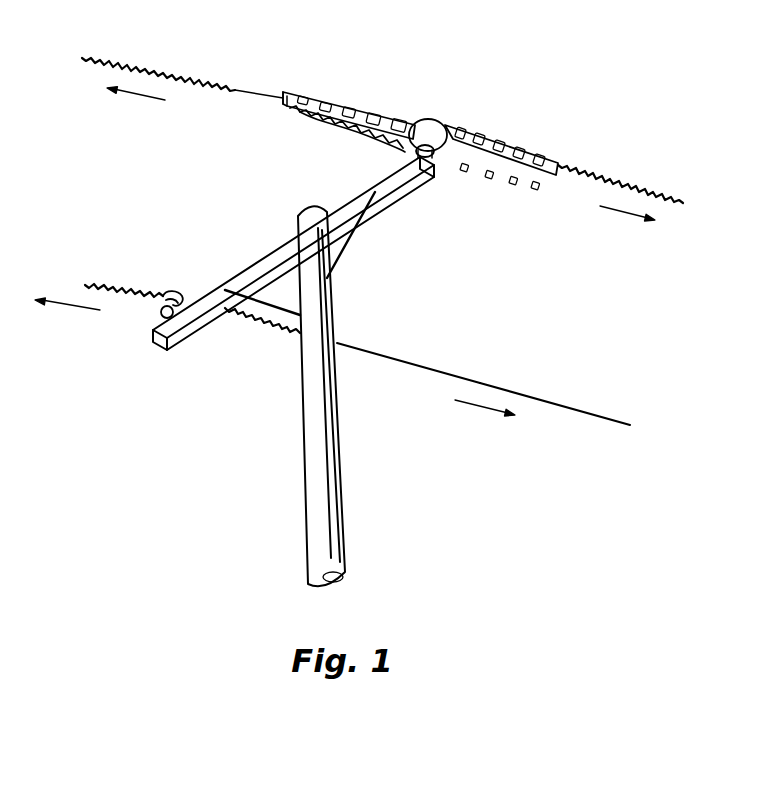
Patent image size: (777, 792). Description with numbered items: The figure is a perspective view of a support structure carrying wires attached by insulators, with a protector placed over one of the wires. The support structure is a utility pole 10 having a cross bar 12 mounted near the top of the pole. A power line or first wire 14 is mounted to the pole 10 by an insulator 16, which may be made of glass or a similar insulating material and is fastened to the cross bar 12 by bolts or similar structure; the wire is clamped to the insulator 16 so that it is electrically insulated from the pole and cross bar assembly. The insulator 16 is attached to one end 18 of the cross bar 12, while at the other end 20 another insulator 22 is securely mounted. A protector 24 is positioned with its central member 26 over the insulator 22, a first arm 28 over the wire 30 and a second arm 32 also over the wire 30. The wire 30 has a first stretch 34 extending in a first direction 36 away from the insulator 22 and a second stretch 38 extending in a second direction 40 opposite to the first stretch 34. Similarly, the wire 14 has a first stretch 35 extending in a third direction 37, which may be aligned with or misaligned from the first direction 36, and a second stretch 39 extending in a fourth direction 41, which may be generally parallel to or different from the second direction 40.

The utility pole 10 is at (345, 487).
The cross bar 12 is at (315, 275).
The first wire 14 is at (420, 356).
The insulator 16 is at (150, 322).
The one end of the cross bar 18 is at (185, 345).
The other end of the cross bar 20 is at (417, 187).
The insulator 22 is at (410, 150).
The protector 24 is at (430, 103).
The central member 26 is at (427, 119).
The first arm 28 is at (337, 98).
The wire 30 is at (242, 90).
The second arm 32 is at (535, 150).
The first stretch 34 is at (138, 62).
The first stretch 35 is at (105, 285).
The first direction 36 is at (137, 98).
The third direction 37 is at (60, 318).
The second stretch 38 is at (633, 188).
The second stretch 39 is at (545, 392).
The second direction 40 is at (600, 208).
The fourth direction 41 is at (470, 410).